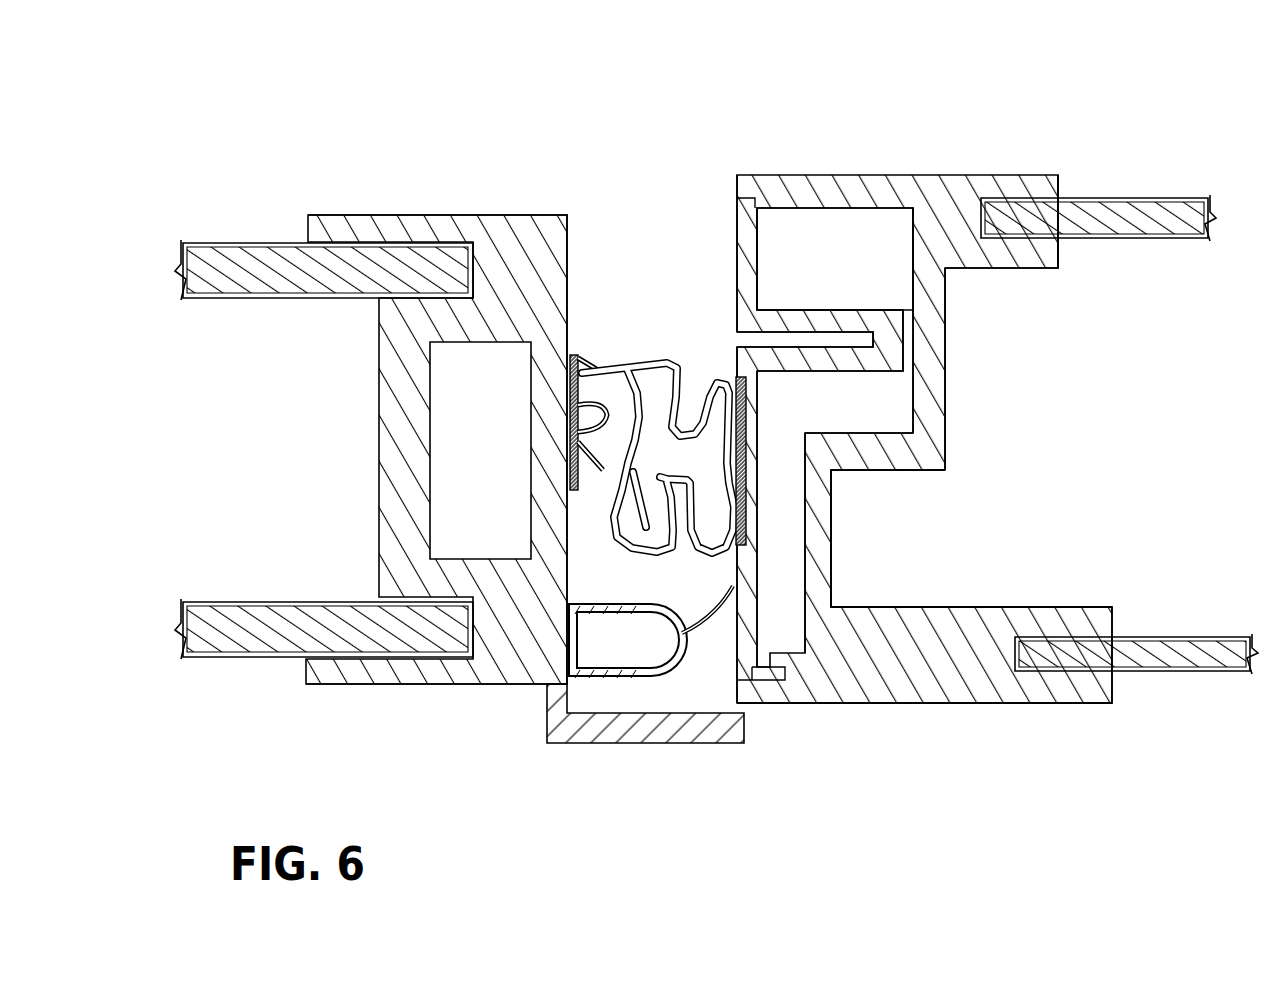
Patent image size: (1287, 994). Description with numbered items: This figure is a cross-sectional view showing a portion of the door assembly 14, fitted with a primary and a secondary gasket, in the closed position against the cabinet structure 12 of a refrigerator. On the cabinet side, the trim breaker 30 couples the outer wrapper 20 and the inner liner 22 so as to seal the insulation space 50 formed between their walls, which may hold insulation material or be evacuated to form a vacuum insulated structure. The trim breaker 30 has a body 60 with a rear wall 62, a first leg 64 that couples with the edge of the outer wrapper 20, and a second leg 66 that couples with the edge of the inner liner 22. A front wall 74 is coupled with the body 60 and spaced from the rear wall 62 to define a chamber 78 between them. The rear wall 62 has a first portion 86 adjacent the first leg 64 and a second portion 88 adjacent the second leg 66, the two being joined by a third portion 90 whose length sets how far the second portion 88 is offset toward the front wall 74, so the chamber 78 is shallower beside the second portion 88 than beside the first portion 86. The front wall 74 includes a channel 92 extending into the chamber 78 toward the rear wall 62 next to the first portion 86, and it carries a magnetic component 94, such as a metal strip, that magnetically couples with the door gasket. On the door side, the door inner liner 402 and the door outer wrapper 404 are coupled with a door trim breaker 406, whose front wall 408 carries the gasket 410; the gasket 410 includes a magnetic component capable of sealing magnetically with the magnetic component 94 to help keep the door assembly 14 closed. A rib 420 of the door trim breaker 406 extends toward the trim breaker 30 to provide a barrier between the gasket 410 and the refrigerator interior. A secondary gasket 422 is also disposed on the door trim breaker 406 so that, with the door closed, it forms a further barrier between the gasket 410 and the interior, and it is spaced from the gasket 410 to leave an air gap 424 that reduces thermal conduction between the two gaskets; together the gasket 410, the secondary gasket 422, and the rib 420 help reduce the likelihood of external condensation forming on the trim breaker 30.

The cabinet structure 12 is at (1112, 147).
The door assembly 14 is at (267, 202).
The outer wrapper 20 is at (1148, 198).
The inner liner 22 is at (1183, 637).
The trim breaker 30 is at (827, 712).
The insulation space 50 is at (1095, 488).
The body 60 is at (917, 177).
The rear wall 62 is at (945, 383).
The first leg 64 is at (1015, 268).
The second leg 66 is at (987, 703).
The front wall 74 is at (735, 213).
The chamber 78 is at (880, 258).
The first portion 86 is at (928, 358).
The second portion 88 is at (833, 533).
The third portion 90 is at (900, 472).
The channel 92 is at (817, 308).
The magnetic component 94 is at (735, 383).
The door inner liner 402 is at (217, 242).
The door outer wrapper 404 is at (223, 602).
The door trim breaker 406 is at (497, 217).
The front wall 408 is at (568, 282).
The gasket 410 is at (632, 357).
The rib 420 is at (697, 743).
The secondary gasket 422 is at (673, 684).
The air gap 424 is at (646, 592).